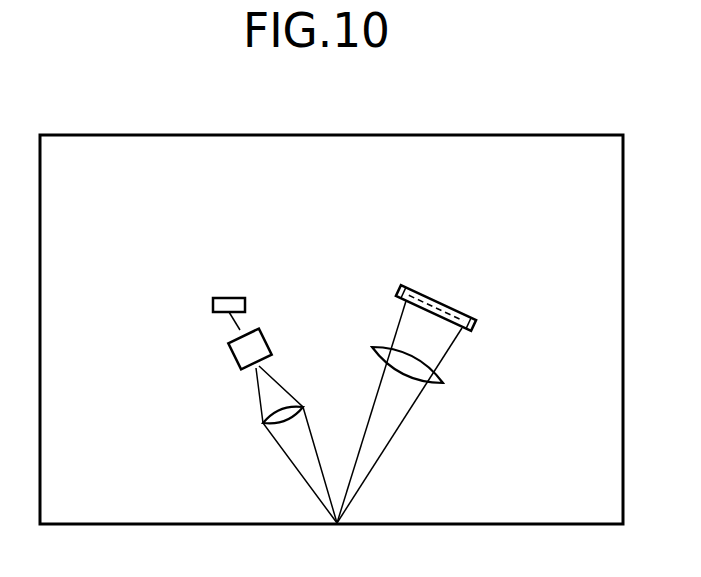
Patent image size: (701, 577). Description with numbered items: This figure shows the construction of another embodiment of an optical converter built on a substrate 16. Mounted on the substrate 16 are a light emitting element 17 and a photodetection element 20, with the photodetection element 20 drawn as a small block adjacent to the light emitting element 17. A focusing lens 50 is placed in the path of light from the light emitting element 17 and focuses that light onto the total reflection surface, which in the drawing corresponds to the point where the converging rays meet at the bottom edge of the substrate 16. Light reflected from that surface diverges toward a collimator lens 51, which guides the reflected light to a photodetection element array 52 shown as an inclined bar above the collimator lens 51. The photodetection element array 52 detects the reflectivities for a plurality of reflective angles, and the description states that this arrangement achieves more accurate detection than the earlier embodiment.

The substrate 16 is at (527, 135).
The photodetection element 20 is at (226, 298).
The light emitting element 17 is at (272, 342).
The focusing lens 50 is at (262, 426).
The photodetection element array 52 is at (416, 285).
The collimator lens 51 is at (440, 385).